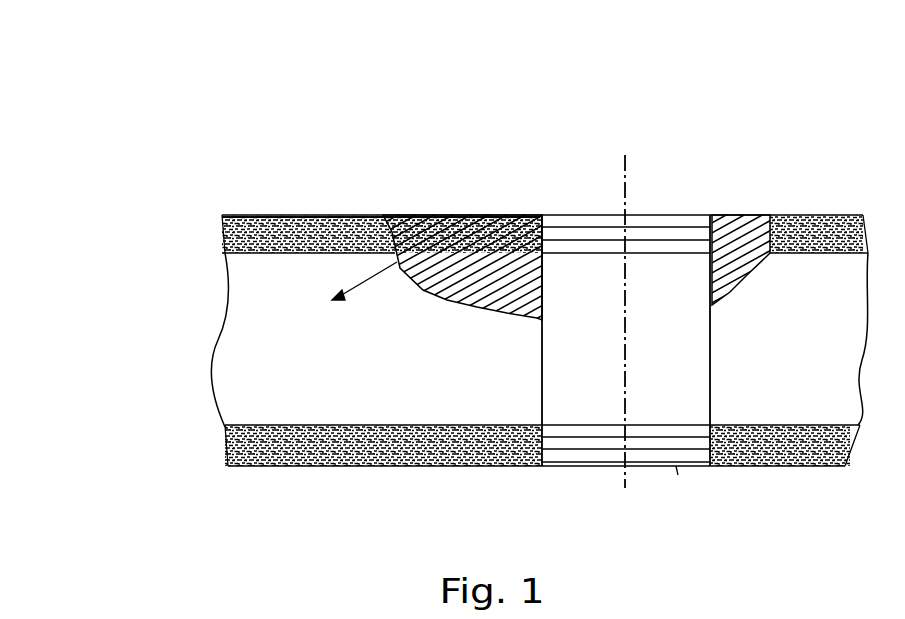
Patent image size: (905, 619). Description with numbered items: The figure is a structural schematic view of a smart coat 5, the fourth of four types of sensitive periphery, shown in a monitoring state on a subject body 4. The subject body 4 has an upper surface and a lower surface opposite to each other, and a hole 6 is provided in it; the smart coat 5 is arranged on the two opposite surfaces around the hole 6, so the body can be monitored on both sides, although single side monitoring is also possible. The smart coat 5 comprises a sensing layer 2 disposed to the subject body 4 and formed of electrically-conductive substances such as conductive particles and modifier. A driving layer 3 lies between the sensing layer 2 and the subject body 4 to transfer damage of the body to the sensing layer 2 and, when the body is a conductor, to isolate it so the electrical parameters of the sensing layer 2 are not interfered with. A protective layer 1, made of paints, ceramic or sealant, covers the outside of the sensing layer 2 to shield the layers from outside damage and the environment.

The protective layer 1 is at (250, 212).
The sensing layer 2 is at (381, 120).
The driving layer 3 is at (529, 224).
The subject body 4 is at (651, 182).
The smart coat 5 is at (138, 134).
The hole 6 is at (665, 290).